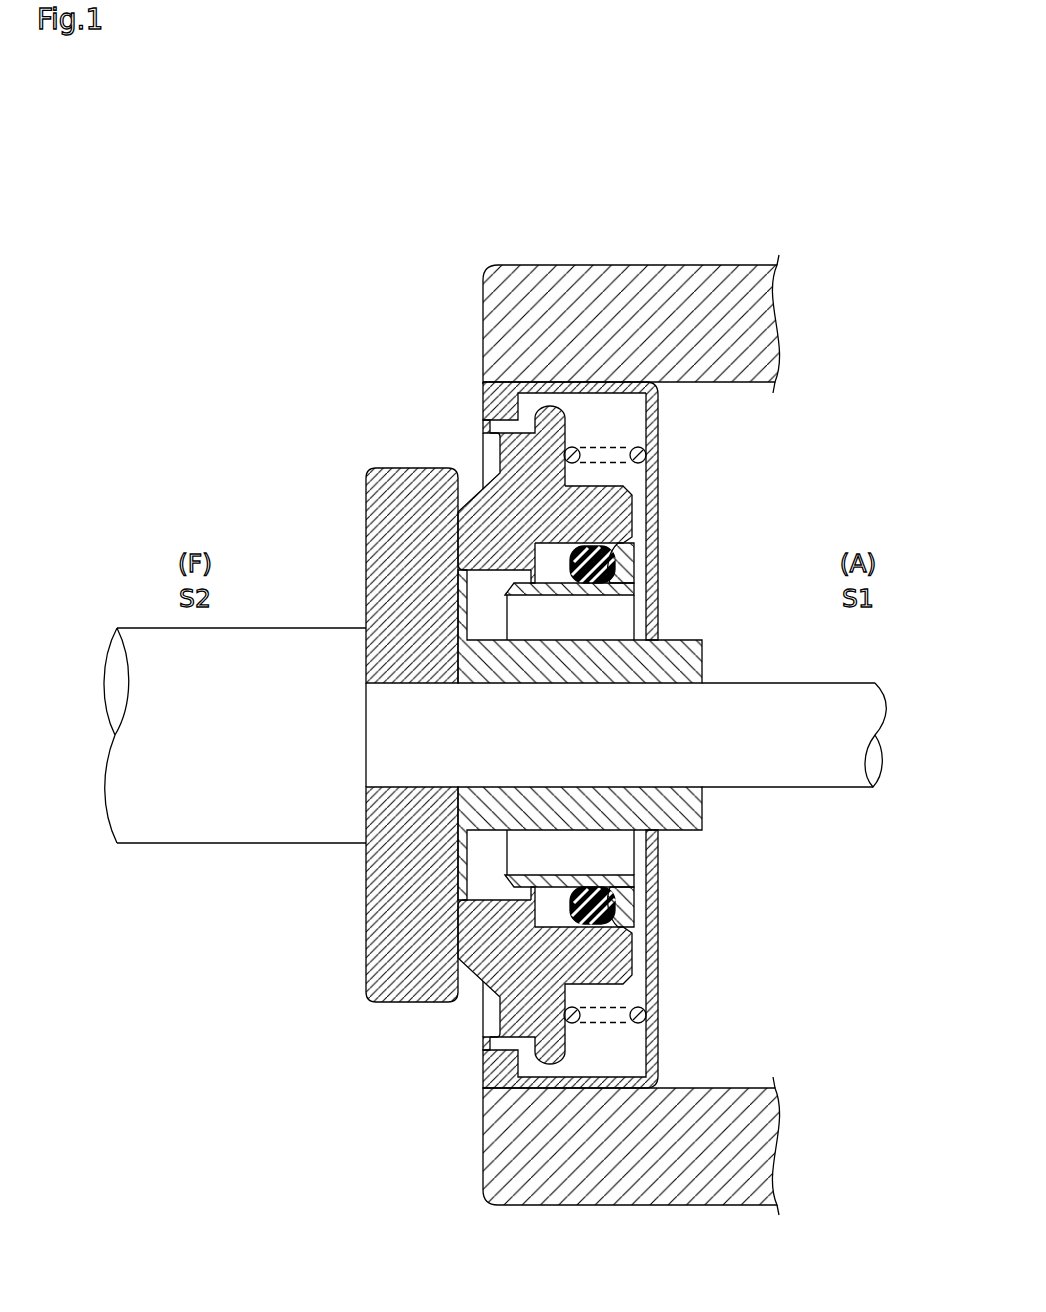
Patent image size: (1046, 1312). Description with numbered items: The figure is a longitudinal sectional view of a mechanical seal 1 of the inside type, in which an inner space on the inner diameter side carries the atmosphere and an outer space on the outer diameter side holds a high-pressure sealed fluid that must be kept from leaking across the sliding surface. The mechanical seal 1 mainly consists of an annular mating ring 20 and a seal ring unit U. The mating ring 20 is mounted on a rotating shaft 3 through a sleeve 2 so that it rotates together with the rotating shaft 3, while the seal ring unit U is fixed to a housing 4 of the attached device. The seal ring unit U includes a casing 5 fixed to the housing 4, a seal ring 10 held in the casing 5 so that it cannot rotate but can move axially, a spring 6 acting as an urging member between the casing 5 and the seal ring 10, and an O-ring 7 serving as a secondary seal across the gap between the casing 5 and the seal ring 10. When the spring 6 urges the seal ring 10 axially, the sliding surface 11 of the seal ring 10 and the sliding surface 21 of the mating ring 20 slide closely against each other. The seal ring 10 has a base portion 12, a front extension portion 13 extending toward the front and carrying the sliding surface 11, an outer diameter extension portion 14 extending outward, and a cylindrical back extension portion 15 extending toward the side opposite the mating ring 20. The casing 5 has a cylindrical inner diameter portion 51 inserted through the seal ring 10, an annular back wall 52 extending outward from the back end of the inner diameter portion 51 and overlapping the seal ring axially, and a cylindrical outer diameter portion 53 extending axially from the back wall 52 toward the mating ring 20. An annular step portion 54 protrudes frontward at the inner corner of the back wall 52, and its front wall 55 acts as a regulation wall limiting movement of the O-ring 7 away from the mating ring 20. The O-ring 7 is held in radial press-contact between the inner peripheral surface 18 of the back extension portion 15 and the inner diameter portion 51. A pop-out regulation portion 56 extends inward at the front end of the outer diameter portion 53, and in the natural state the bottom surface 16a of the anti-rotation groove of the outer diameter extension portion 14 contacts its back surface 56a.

The mechanical seal 1 is at (254, 287).
The sleeve 2 is at (703, 832).
The rotating shaft 3 is at (180, 827).
The housing 4 is at (722, 283).
The casing 5 is at (668, 418).
The spring 6 is at (580, 1022).
The O-ring 7 is at (615, 912).
The seal ring 10 is at (532, 635).
The sliding surface 11 is at (478, 900).
The base portion 12 is at (515, 522).
The front extension portion 13 is at (486, 571).
The outer diameter extension portion 14 is at (568, 446).
The back extension portion 15 is at (634, 520).
The bottom surface 16a is at (535, 418).
The inner peripheral surface 18 is at (567, 907).
The mating ring 20 is at (353, 485).
The sliding surface 21 is at (462, 952).
The inner diameter portion 51 is at (600, 592).
The back wall 52 is at (652, 463).
The outer diameter portion 53 is at (541, 370).
The step portion 54 is at (624, 567).
The front wall 55 is at (612, 556).
The pop-out regulation portion 56 is at (587, 647).
The back surface 56a is at (522, 394).
The seal ring unit U is at (472, 362).